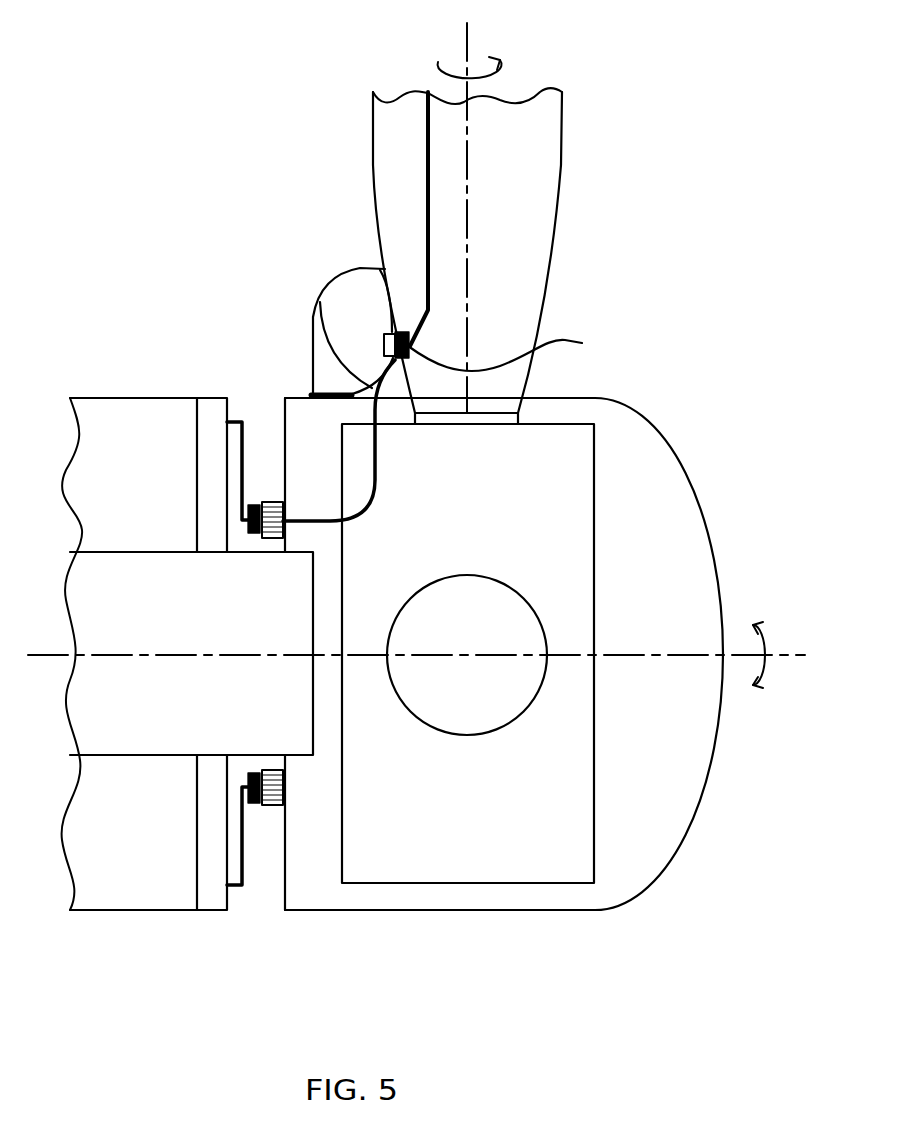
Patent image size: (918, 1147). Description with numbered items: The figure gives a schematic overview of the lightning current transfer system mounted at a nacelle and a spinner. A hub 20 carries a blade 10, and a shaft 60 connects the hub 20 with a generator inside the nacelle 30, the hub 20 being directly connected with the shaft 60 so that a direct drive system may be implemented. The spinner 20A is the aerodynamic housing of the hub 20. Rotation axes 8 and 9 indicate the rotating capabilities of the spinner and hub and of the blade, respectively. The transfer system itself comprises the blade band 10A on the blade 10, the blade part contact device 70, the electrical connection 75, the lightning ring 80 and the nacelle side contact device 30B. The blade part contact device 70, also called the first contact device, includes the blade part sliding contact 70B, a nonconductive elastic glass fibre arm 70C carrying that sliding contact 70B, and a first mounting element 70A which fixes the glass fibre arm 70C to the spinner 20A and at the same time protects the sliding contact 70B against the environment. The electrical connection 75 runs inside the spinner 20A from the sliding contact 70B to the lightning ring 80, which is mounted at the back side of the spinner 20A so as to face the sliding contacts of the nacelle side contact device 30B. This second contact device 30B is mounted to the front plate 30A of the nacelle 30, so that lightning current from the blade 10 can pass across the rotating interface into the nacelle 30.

The rotation axis 8 is at (797, 658).
The rotation axis 9 is at (467, 30).
The blade 10 is at (532, 210).
The blade band 10A is at (518, 350).
The hub 20 is at (563, 873).
The spinner 20A is at (688, 830).
The nacelle 30 is at (117, 900).
The front plate 30A is at (215, 903).
The nacelle side contact device 30B is at (242, 420).
The shaft 60 is at (82, 718).
The blade part contact device 70 is at (300, 313).
The first mounting element 70A is at (337, 282).
The blade part sliding contact 70B is at (380, 270).
The nonconductive elastic glass fibre arm 70C is at (320, 300).
The electrical connection 75 is at (377, 487).
The lightning ring 80 is at (268, 502).